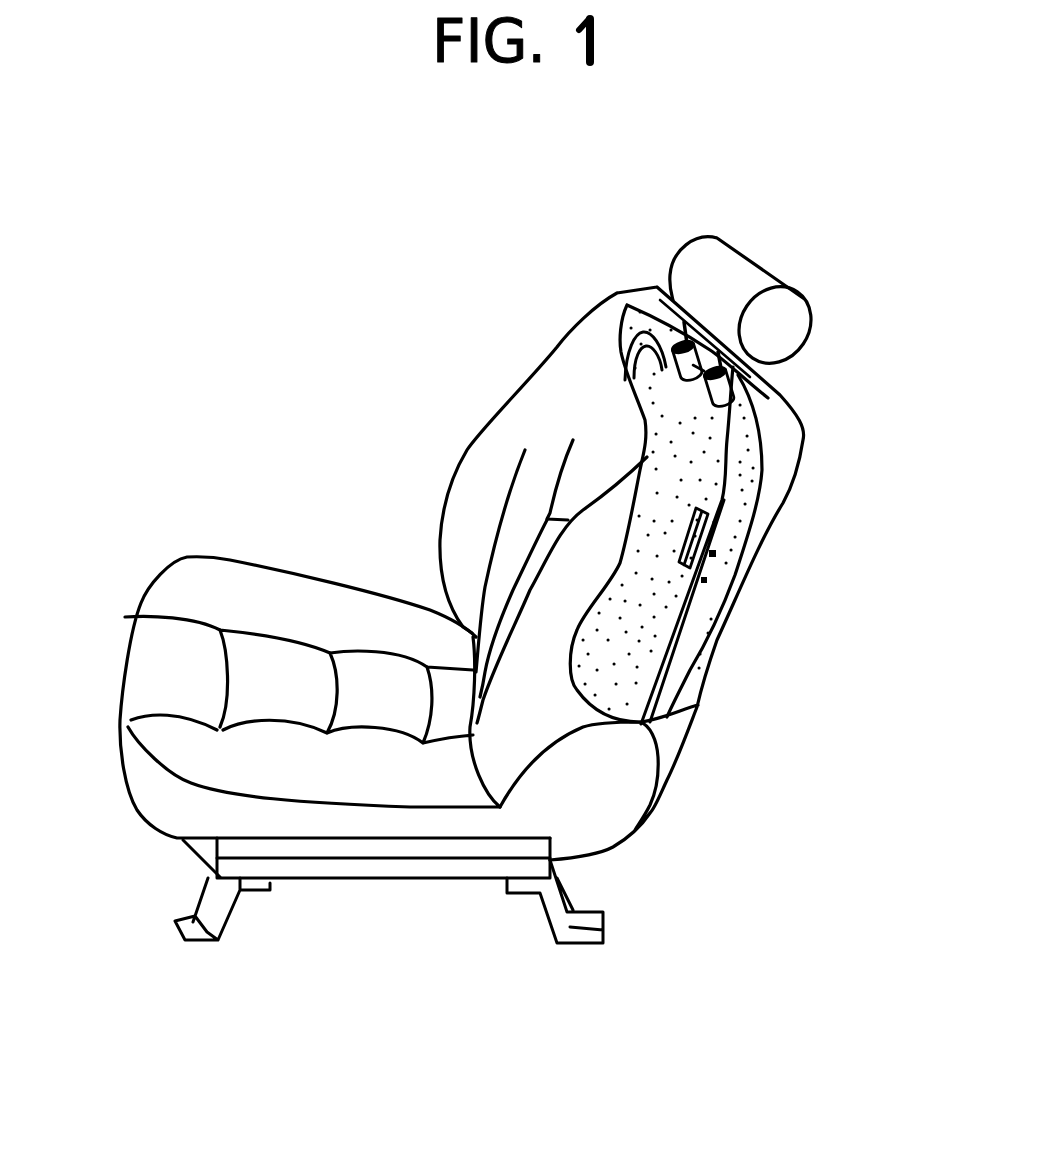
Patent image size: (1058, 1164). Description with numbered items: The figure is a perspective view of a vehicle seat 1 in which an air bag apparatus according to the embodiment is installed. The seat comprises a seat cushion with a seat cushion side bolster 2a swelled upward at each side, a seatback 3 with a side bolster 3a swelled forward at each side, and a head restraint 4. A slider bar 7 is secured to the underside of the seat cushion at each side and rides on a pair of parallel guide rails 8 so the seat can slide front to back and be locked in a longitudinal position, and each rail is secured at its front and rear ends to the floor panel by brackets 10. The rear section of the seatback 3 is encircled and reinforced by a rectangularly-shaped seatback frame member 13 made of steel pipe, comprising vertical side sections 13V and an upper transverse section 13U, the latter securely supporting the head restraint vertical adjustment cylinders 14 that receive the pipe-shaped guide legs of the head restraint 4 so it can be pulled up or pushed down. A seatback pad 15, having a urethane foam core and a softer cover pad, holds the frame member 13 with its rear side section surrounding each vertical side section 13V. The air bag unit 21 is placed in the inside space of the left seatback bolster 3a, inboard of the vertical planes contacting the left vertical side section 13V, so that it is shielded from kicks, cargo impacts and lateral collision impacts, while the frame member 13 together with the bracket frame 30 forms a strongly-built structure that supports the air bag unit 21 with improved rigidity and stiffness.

The seat 1 is at (770, 893).
The seat cushion side bolster 2a is at (245, 583).
The seatback 3 is at (483, 440).
The side bolster 3a is at (463, 510).
The head restraint 4 is at (780, 292).
The slider bar 7 is at (357, 850).
The guide rail 8 is at (473, 870).
The bracket 10 is at (690, 972).
The seatback frame member 13 is at (740, 511).
The upper transverse section 13U is at (722, 413).
The vertical side section 13V is at (787, 471).
The head restraint vertical adjustment cylinder 14 is at (720, 377).
The seatback pad 15 is at (647, 397).
The air bag unit 21 is at (717, 560).
The bracket frame 30 is at (667, 693).